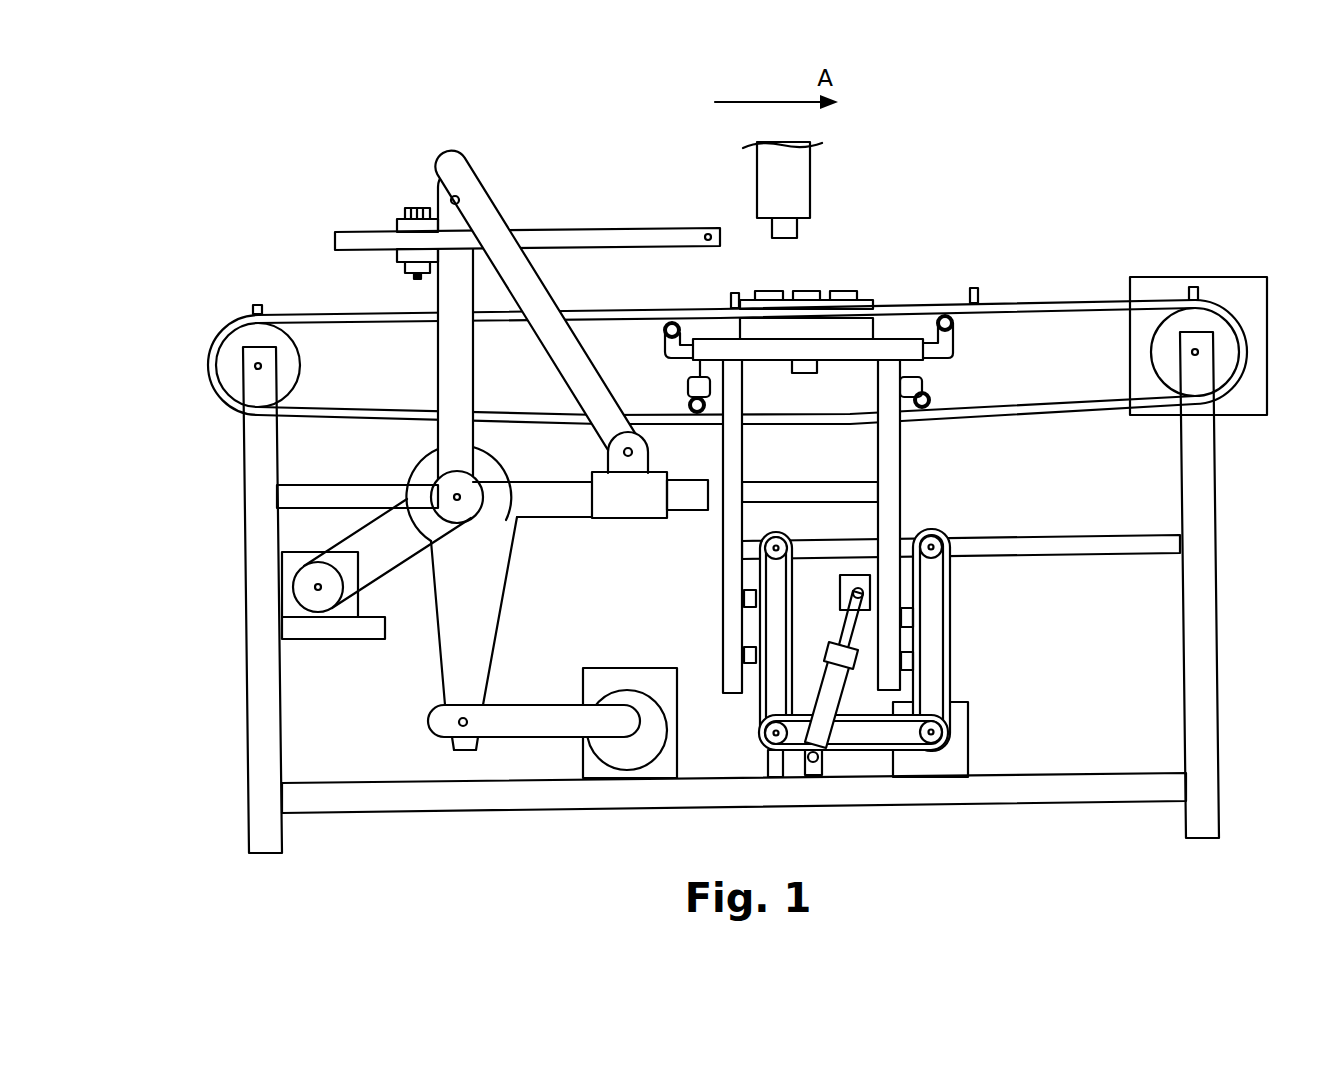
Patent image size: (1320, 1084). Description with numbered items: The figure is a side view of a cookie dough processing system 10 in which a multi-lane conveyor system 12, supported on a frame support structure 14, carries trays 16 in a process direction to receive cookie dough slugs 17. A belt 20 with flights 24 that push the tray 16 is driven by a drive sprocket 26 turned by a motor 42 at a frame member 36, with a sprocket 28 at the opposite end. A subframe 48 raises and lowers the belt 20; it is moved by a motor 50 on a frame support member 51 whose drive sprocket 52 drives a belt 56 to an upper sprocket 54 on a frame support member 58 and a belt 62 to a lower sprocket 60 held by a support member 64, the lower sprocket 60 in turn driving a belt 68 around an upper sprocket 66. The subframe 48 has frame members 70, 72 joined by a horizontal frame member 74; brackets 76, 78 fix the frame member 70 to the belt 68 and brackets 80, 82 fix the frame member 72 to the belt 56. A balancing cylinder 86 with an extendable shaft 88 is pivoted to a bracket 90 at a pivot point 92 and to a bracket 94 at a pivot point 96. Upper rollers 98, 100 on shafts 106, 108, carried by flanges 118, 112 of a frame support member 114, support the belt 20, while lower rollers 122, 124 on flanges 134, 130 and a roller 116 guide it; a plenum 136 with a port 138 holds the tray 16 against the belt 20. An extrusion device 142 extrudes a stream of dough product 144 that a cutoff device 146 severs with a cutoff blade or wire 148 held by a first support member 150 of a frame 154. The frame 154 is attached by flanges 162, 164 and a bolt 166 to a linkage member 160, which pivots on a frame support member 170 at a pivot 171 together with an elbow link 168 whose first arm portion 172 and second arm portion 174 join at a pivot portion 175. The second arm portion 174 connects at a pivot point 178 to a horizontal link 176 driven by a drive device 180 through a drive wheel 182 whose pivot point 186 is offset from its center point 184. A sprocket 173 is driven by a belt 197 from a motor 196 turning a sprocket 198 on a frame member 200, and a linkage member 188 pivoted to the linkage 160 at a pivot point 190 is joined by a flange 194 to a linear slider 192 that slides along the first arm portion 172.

The cookie dough processing system 10 is at (992, 204).
The multi-lane conveyor system 12 is at (1128, 183).
The frame support structure 14 is at (1222, 676).
The tray 16 is at (866, 302).
The cookie dough slugs 17 is at (780, 291).
The belt 20 is at (1058, 303).
The flights 24 is at (262, 304).
The drive sprocket 26 is at (1203, 310).
The idler pulley 28 is at (250, 322).
The frame member 36 is at (1213, 484).
The motor 42 is at (1225, 408).
The subframe 48 is at (904, 466).
The motor 50 is at (968, 760).
The frame support member 51 is at (1010, 794).
The drive sprocket 52 is at (950, 735).
The upper sprocket 54 is at (940, 538).
The belt 56 is at (945, 660).
The frame support member 58 is at (1076, 541).
The lower sprocket 60 is at (762, 737).
The belt 62 is at (868, 756).
The support member 64 is at (776, 776).
The upper sprocket 66 is at (778, 546).
The driven belt 68 is at (795, 667).
The frame member 70 is at (722, 544).
The frame member 72 is at (900, 500).
The horizontal frame member 74 is at (800, 486).
The bracket 76 is at (744, 598).
The bracket 78 is at (744, 652).
The bracket 80 is at (913, 615).
The bracket 82 is at (913, 660).
The balancing cylinder 86 is at (838, 692).
The extendable shaft 88 is at (845, 620).
The bracket 90 is at (854, 588).
The pivot point 92 is at (852, 592).
The bracket 94 is at (815, 764).
The pivot point 96 is at (820, 762).
The upper roller 98 is at (665, 333).
The upper roller 100 is at (953, 325).
The shaft 106 is at (680, 333).
The shaft 108 is at (940, 326).
The flange 112 is at (952, 345).
The frame support member 114 is at (840, 350).
The lower guide roller 116 is at (690, 392).
The flange 118 is at (665, 346).
The lower roller 122 is at (689, 405).
The lower roller 124 is at (940, 406).
The flange 130 is at (935, 386).
The flanges 134 is at (688, 382).
The plenum 136 is at (860, 327).
The port 138 is at (803, 362).
The extrusion device 142 is at (790, 176).
The dough product 144 is at (797, 230).
The cutoff device 146 is at (528, 150).
The cutoff blade or wire 148 is at (710, 234).
The first support member 150 is at (645, 230).
The frame 154 is at (584, 225).
The linkage member 160 is at (440, 344).
The flange 162 is at (397, 224).
The flange 164 is at (398, 256).
The bolt 166 is at (418, 207).
The pivotable elbow link 168 is at (508, 480).
The frame support member 170 is at (297, 492).
The pivot 171 is at (430, 484).
The first arm portion 172 is at (553, 510).
The sprocket 173 is at (488, 468).
The second arm portion 174 is at (490, 630).
The pivot portion 175 is at (508, 560).
The horizontal link 176 is at (515, 716).
The pivot point 178 is at (450, 724).
The drive device 180 is at (598, 672).
The drive wheel 182 is at (645, 760).
The center point 184 is at (640, 692).
The pivot point 186 is at (640, 690).
The linkage member 188 is at (555, 358).
The pivot point 190 is at (460, 198).
The linear slider 192 is at (625, 520).
The flange 194 is at (650, 454).
The motor 196 is at (285, 560).
The belt 197 is at (385, 580).
The sprocket 198 is at (315, 606).
The frame member 200 is at (370, 640).